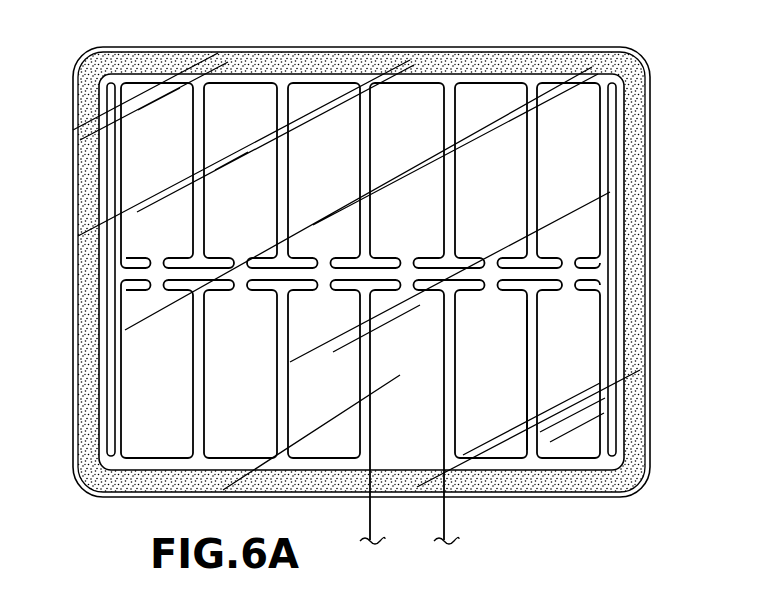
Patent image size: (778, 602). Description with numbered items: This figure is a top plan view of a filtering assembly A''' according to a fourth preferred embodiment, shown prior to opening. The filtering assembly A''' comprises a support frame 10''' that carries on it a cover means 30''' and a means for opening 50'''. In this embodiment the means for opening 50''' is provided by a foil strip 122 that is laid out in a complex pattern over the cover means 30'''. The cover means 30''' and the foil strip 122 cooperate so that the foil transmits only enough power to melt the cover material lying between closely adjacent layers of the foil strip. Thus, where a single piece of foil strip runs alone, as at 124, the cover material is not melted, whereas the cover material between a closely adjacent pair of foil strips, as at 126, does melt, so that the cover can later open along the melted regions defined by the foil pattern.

The filtering assembly A''' is at (364, 276).
The support frame 10''' is at (392, 272).
The cover means 30''' is at (363, 249).
The means for opening 50''' is at (360, 139).
The foil strip 122 is at (126, 356).
The single piece of foil strip 124 is at (558, 457).
The closely adjacent pair of foil strips 126 is at (525, 438).